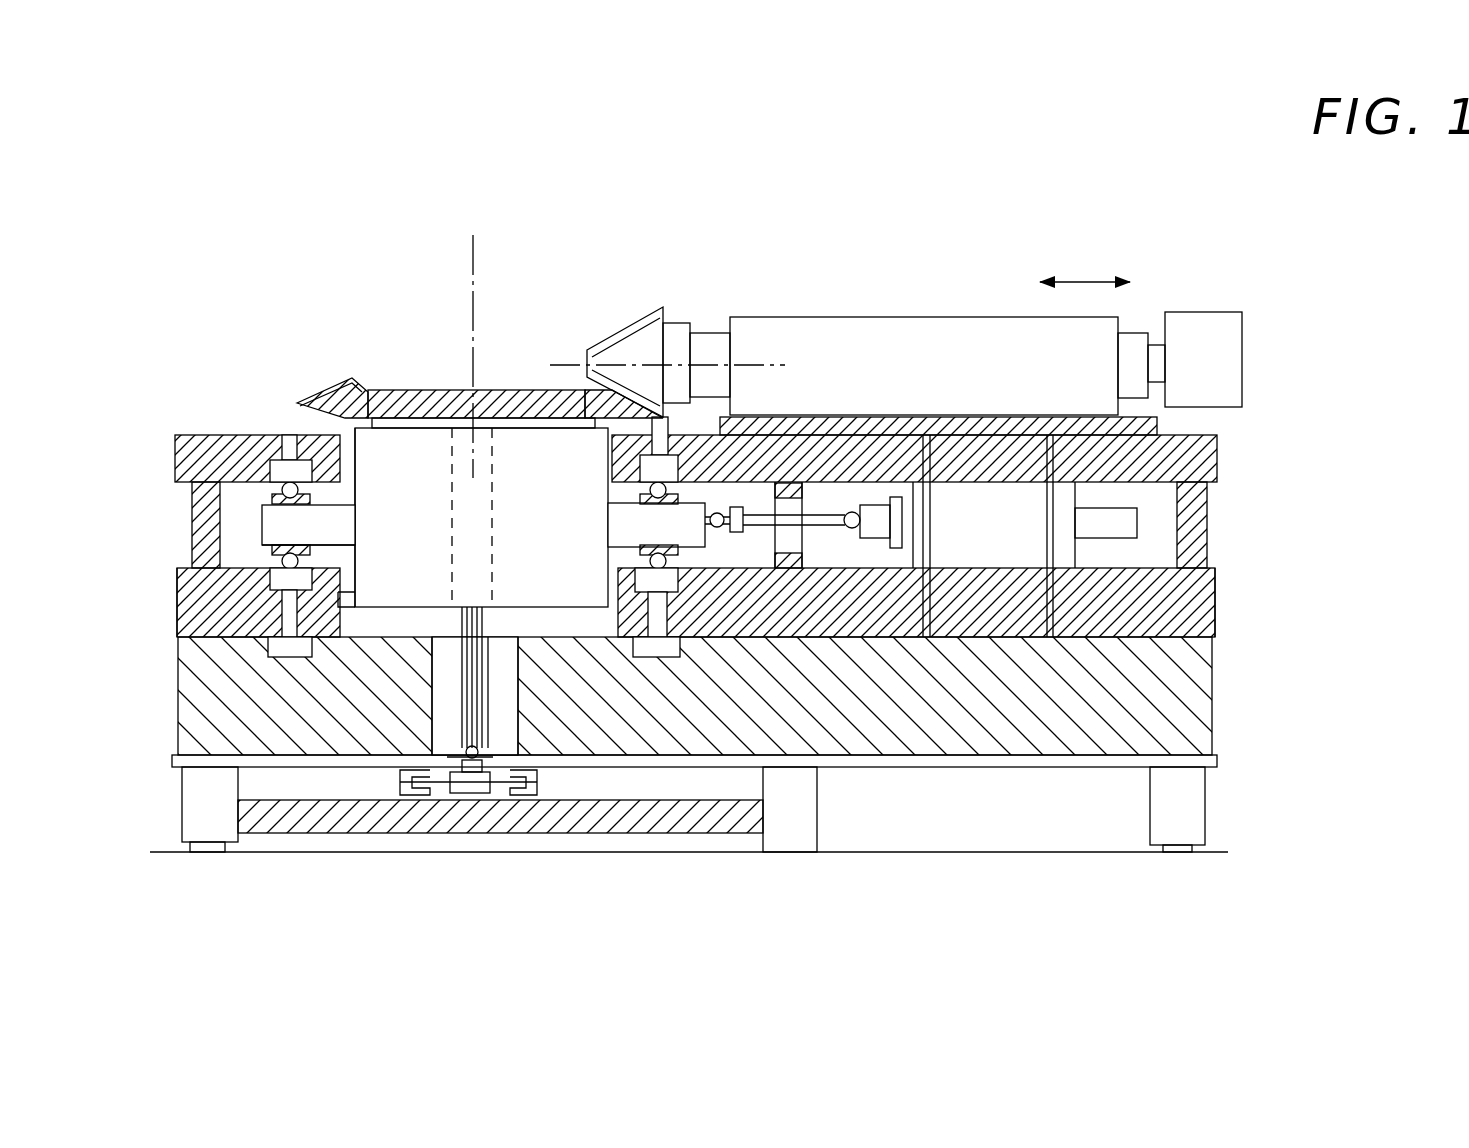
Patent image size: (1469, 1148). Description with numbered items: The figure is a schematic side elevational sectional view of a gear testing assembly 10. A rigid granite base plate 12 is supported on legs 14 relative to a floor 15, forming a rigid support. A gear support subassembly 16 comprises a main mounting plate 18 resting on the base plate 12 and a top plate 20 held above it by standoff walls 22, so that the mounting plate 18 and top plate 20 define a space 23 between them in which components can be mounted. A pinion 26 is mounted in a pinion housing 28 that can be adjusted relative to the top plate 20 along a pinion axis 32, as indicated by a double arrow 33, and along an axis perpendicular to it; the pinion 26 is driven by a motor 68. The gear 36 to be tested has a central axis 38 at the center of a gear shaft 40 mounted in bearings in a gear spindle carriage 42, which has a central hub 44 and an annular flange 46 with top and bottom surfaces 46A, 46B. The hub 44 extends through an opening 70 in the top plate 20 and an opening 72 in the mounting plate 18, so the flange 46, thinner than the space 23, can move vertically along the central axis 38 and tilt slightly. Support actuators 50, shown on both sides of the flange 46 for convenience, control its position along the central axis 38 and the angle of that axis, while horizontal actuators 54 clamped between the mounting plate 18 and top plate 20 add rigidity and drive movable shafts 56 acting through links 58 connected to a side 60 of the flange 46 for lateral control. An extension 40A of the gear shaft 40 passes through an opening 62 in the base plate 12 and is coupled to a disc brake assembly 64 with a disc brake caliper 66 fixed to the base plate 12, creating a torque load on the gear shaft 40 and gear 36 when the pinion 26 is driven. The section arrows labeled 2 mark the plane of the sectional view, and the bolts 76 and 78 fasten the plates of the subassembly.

The section line for FIG. 2 is at (240, 452).
The gear testing assembly 10 is at (1267, 414).
The granite base plate 12 is at (1000, 742).
The legs 14 is at (188, 832).
The floor 15 is at (1212, 851).
The gear support subassembly 16 is at (176, 585).
The main mounting plate 18 is at (1215, 631).
The top plate 20 is at (180, 436).
The standoff walls 22 is at (195, 540).
The space 23 is at (1217, 500).
The pinion 26 is at (626, 333).
The pinion housing 28 is at (878, 332).
The pinion axis 32 is at (710, 360).
The double arrow 33 is at (1078, 282).
The gear 36 is at (332, 386).
The central axis 38 is at (474, 277).
The gear shaft 40 is at (485, 621).
The extension of the gear shaft 40A is at (458, 735).
The gear spindle carriage 42 is at (368, 412).
The central hub 44 is at (350, 598).
The annular flange 46 is at (320, 522).
The top surface of the flange 46A is at (356, 497).
The bottom surface of the flange 46B is at (358, 560).
The support actuators 50 is at (310, 565).
The horizontal actuators 54 is at (1087, 538).
The movable shafts 56 is at (880, 525).
The links 58 is at (818, 525).
The side of the flange 60 is at (705, 521).
The opening 62 is at (505, 740).
The disc brake assembly 64 is at (475, 785).
The disc brake caliper 66 is at (540, 782).
The motor 68 is at (1215, 312).
The opening 70 is at (355, 463).
The opening 72 is at (350, 640).
The bolt 76 is at (270, 436).
The bolt 78 is at (270, 604).